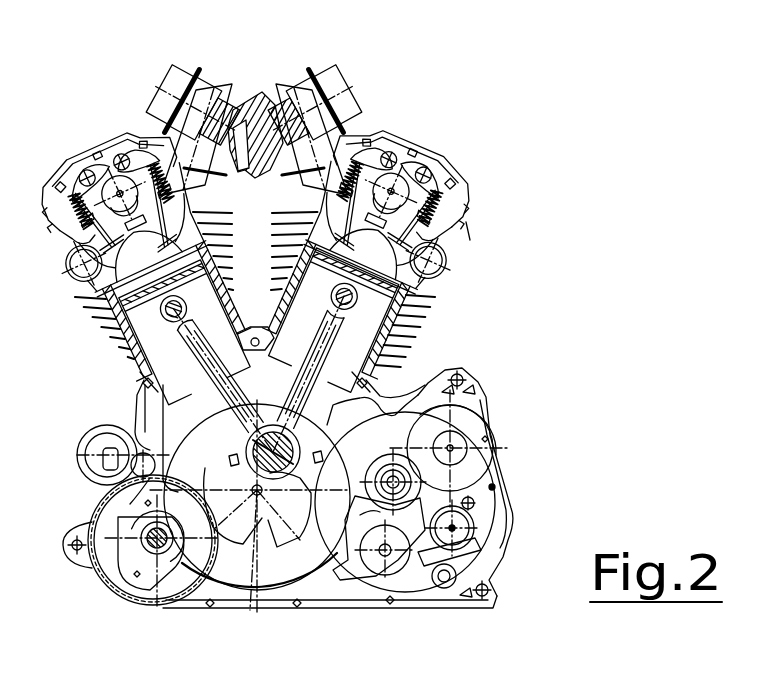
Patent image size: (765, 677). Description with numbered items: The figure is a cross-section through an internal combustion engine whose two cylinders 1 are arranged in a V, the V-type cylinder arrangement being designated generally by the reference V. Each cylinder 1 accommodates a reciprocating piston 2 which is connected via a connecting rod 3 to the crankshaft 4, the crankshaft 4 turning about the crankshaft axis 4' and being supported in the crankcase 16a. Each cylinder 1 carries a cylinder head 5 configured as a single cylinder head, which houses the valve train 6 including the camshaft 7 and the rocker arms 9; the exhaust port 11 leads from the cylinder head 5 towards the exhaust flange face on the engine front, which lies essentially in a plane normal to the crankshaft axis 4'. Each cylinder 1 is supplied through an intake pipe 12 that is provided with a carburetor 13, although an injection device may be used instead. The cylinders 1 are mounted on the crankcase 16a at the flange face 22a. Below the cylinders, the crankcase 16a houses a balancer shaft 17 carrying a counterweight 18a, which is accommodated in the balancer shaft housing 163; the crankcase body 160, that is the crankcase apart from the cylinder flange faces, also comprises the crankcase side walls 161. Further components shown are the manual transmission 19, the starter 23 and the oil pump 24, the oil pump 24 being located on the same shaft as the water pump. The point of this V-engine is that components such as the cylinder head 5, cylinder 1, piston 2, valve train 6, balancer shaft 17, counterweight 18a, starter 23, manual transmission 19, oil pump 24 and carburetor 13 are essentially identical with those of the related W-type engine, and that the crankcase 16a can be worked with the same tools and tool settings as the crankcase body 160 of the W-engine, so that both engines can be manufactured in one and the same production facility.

The cylinder 1 is at (110, 337).
The piston 2 is at (153, 328).
The connecting rod 3 is at (238, 393).
The crankshaft 4 is at (258, 513).
The crankshaft axis 4' is at (250, 531).
The cylinder head 5 is at (72, 249).
The valve train 6 is at (98, 143).
The camshaft 7 is at (123, 168).
The rocker arm 9 is at (70, 172).
The exhaust port 11 is at (85, 270).
The intake pipe 12 is at (219, 160).
The carburetor 13 is at (178, 82).
The crankcase 16a is at (313, 600).
The balancer shaft 17 is at (172, 527).
The counterweight 18a is at (150, 552).
The manual transmission 19 is at (490, 458).
The flange face 22a is at (148, 374).
The starter 23 is at (87, 478).
The oil pump 24 is at (400, 545).
The crankcase body 160 is at (160, 428).
The crankcase side wall 161 is at (128, 426).
The balancer shaft housing 163 is at (100, 575).
The V-type cylinder arrangement V is at (468, 226).